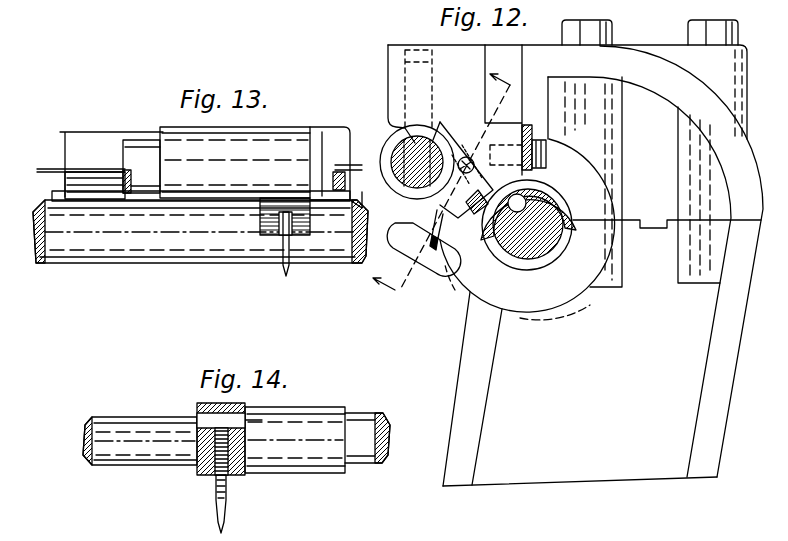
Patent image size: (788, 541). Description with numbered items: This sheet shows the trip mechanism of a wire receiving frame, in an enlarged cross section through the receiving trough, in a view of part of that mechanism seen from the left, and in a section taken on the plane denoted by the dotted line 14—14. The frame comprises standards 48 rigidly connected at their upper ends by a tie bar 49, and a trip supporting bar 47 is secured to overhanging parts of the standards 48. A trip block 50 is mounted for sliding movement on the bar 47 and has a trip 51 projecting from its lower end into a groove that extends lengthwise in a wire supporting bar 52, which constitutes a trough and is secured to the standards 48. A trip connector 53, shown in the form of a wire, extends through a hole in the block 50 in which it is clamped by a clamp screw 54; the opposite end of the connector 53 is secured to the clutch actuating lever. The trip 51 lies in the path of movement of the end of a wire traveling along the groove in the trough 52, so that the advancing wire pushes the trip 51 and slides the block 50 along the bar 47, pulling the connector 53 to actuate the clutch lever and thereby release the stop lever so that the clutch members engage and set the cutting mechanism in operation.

In FIG. 12, the section line 14— 14 is at (445, 183).
In FIG. 13, the trip supporting bar 47 is at (141, 142).
In FIG. 14, the trip supporting bar 47 is at (84, 444).
In FIG. 12, the trip supporting bar 47 is at (447, 130).
In FIG. 12, the standards 48 is at (693, 346).
In FIG. 13, the tie bar 49 is at (66, 133).
In FIG. 12, the tie bar 49 is at (548, 112).
In FIG. 13, the trip block 50 is at (285, 135).
In FIG. 14, the trip block 50 is at (326, 410).
In FIG. 12, the trip block 50 is at (412, 200).
In FIG. 12, the trip 51 is at (555, 204).
In FIG. 13, the wire supporting bar 52 is at (122, 258).
In FIG. 12, the wire supporting bar 52 is at (540, 248).
In FIG. 13, the trip connector 53 is at (86, 170).
In FIG. 14, the trip connector 53 is at (360, 418).
In FIG. 12, the trip connector 53 is at (467, 157).
In FIG. 13, the clamp screw 54 is at (284, 262).
In FIG. 14, the clamp screw 54 is at (226, 512).
In FIG. 12, the clamp screw 54 is at (458, 256).